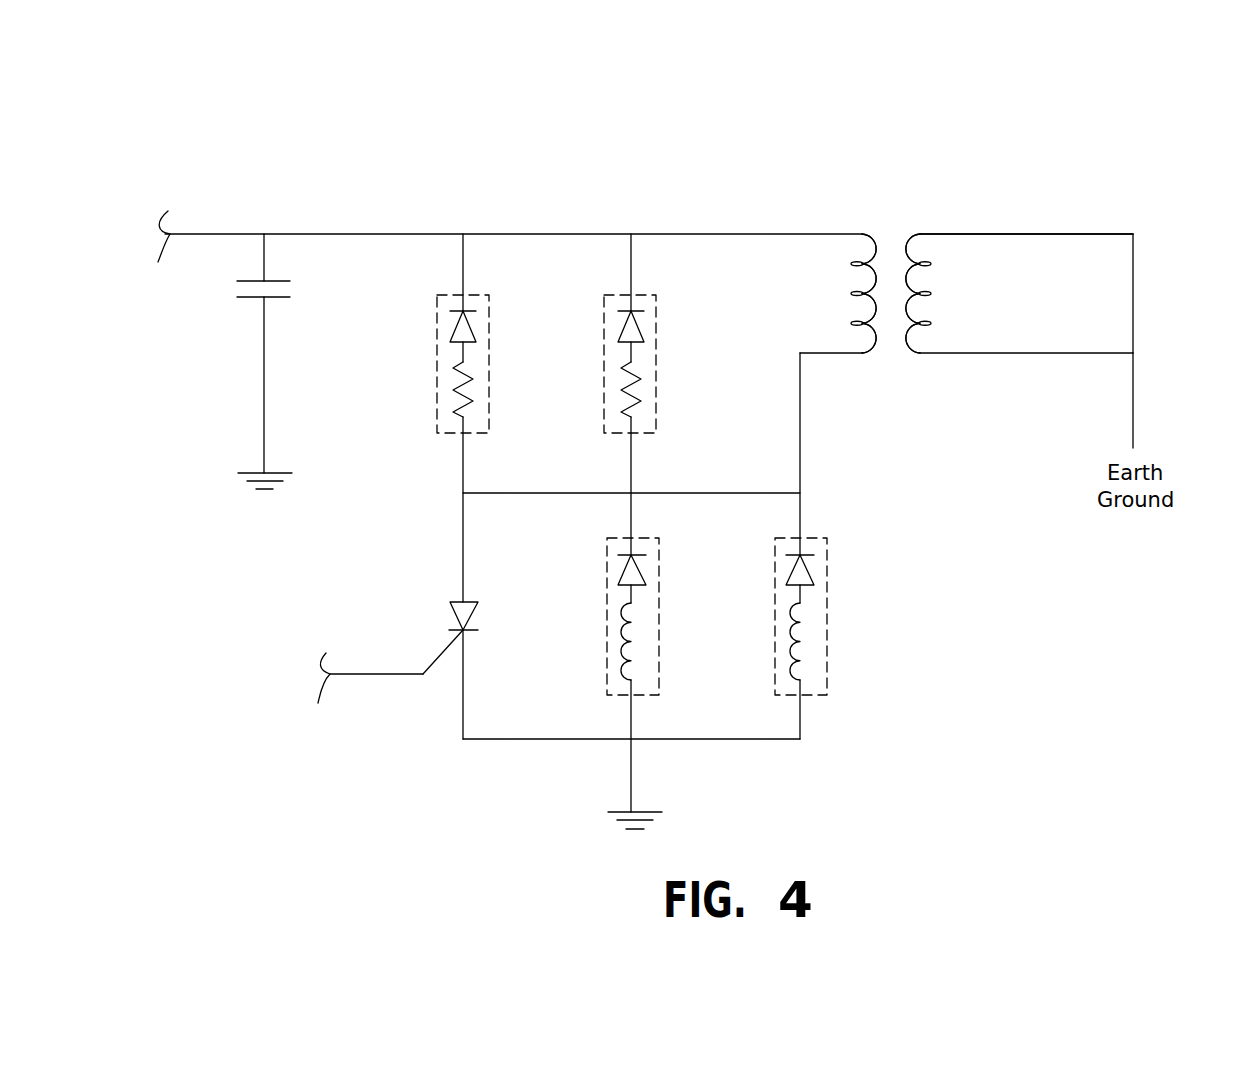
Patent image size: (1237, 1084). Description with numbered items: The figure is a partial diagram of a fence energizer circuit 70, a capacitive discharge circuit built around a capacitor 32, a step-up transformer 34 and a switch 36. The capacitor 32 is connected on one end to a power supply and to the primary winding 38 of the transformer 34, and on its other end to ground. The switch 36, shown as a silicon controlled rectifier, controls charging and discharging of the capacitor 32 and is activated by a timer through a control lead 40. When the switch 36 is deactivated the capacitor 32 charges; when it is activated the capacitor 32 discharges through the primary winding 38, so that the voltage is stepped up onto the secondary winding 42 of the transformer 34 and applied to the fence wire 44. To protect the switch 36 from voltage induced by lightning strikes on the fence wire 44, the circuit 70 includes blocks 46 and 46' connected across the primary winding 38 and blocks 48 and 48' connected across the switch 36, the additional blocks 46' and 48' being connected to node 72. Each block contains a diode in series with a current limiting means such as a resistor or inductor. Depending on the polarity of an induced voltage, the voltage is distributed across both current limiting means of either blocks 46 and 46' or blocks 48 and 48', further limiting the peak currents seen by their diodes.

The fence energizer circuit 70 is at (688, 133).
The capacitor 32 is at (216, 305).
The block 46 is at (516, 364).
The block 46' is at (687, 364).
The node 72 is at (554, 493).
The step-up transformer 34 is at (892, 225).
The primary winding 38 is at (840, 298).
The secondary winding 42 is at (940, 295).
The fence wire 44 is at (1192, 206).
The switch 36 is at (490, 610).
The control lead 40 is at (377, 675).
The block 48 is at (686, 616).
The block 48' is at (857, 616).